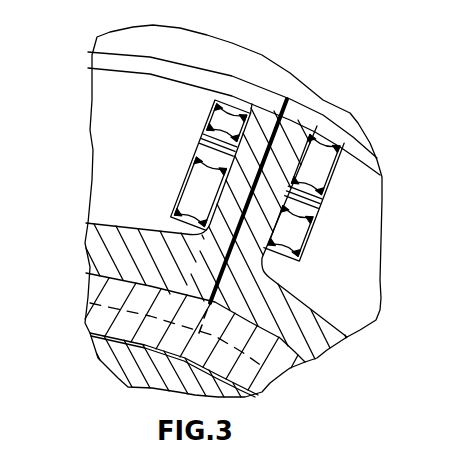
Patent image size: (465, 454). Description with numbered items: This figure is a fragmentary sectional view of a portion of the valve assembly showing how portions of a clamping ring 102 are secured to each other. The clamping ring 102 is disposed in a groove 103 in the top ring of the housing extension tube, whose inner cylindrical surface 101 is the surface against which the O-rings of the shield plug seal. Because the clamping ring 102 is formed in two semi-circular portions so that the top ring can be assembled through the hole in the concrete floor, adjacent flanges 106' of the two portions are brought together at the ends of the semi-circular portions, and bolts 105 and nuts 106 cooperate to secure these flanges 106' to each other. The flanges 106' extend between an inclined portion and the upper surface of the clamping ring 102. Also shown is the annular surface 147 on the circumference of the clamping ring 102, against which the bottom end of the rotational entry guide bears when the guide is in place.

The annular surface 147 is at (117, 57).
The flanges 106' is at (276, 187).
The bolts 105 is at (192, 180).
The nuts 106 is at (348, 195).
The clamping ring 102 is at (117, 222).
The inner cylindrical surface 101 is at (90, 311).
The groove 103 is at (290, 368).